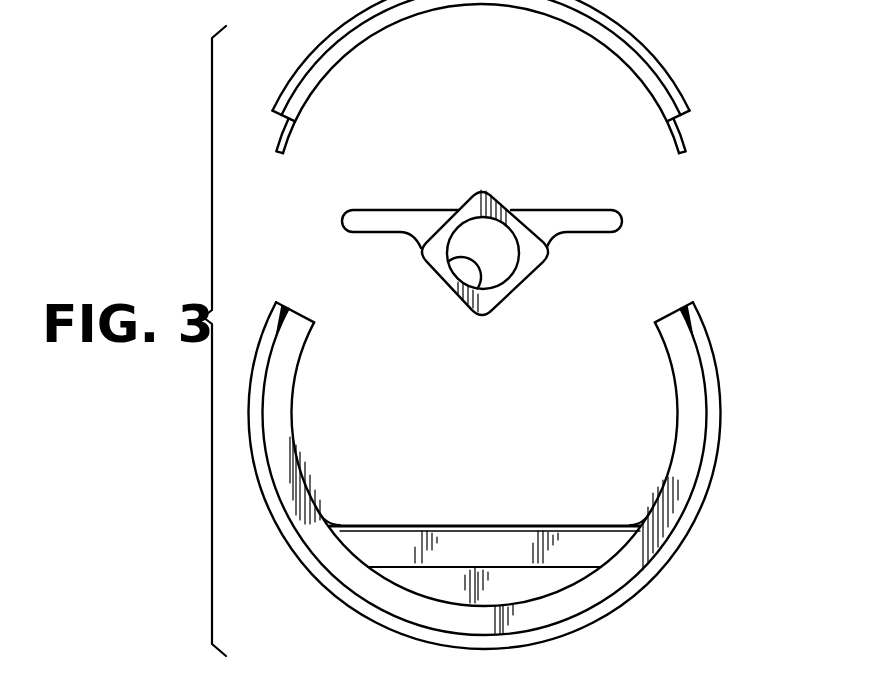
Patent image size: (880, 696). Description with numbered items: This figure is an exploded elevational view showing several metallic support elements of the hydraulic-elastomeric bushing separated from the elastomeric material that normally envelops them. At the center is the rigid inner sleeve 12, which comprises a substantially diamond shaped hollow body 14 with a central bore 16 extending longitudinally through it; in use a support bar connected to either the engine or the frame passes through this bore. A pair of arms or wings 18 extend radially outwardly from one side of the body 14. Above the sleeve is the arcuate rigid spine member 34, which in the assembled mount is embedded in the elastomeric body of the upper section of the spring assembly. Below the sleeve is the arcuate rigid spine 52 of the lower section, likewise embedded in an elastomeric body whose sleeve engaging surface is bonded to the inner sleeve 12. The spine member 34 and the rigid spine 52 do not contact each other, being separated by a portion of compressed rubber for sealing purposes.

The inner sleeve 12 is at (500, 244).
The hollow body 14 is at (512, 288).
The central bore 16 is at (472, 296).
The arms or wings 18 is at (402, 218).
The spine member 34 is at (623, 31).
The rigid spine 52 is at (713, 380).